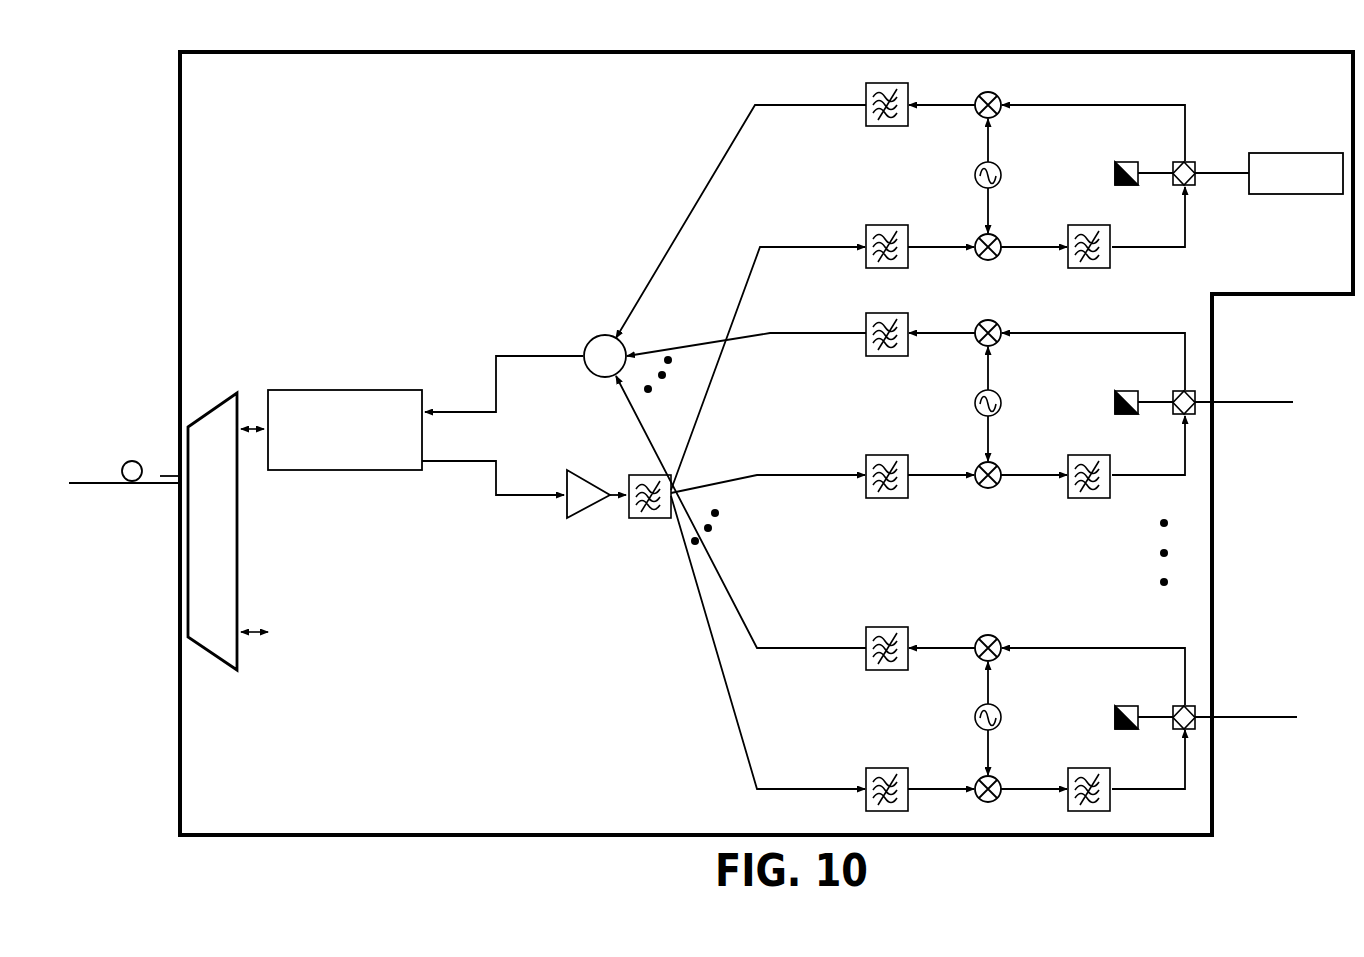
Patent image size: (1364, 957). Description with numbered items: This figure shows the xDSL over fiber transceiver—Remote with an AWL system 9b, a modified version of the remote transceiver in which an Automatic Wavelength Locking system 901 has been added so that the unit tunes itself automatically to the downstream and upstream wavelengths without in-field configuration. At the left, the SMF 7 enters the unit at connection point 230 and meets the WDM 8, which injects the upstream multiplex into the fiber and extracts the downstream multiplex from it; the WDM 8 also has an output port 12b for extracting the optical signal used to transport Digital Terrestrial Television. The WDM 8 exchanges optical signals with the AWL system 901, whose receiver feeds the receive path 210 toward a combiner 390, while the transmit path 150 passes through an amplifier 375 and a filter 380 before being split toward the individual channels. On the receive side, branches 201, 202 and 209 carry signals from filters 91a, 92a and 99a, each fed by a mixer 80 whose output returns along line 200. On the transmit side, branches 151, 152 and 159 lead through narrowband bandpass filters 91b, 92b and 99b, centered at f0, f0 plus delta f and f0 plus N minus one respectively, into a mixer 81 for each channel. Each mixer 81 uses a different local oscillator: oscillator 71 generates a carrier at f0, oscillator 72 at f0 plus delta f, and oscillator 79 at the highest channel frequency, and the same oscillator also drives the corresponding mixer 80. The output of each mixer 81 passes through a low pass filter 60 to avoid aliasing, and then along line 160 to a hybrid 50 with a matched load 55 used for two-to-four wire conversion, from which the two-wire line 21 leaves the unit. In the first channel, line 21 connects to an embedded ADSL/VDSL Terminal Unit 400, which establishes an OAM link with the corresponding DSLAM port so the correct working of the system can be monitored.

The xDSL over fiber transceiver—Remote with an AWL system 9b is at (176, 133).
The SMF 7 is at (93, 490).
The connection point 230 is at (185, 478).
The WDM 8 is at (204, 410).
The output port 12b is at (256, 641).
The Automatic Wavelength Locking system 901 is at (346, 386).
The receive signal path 210 is at (508, 352).
The transmit signal path 150 is at (512, 499).
The amplifier 375 is at (584, 519).
The filter 380 is at (646, 520).
The combiner 390 is at (602, 332).
The receive branch of first channel 201 is at (789, 101).
The receive branch of second channel 202 is at (802, 329).
The receive branch of n-th channel 209 is at (794, 644).
The receive filter of first channel 91a is at (861, 129).
The bandpass filter 91b is at (861, 229).
The receive filter of second channel 92a is at (861, 358).
The bandpass filter 92b is at (861, 457).
The receive filter of n-th channel 99a is at (861, 671).
The bandpass filter 99b is at (861, 769).
The transmit branch of first channel 151 is at (941, 244).
The transmit branch of second channel 152 is at (789, 471).
The transmit branch of n-th channel 159 is at (941, 785).
The receive mixer 80 is at (976, 97).
The mixer 81 is at (974, 239).
The oscillator 71 is at (974, 165).
The oscillator 72 is at (974, 393).
The oscillator 79 is at (974, 707).
The low pass filter 60 is at (1059, 227).
The transmit line 160 is at (1179, 243).
The receive line 200 is at (1177, 101).
The matched load 55 is at (1111, 159).
The hybrid 50 is at (1171, 159).
The antenna port line 21 is at (1227, 169).
The embedded ADSL/VDSL Terminal Unit 400 is at (1305, 150).